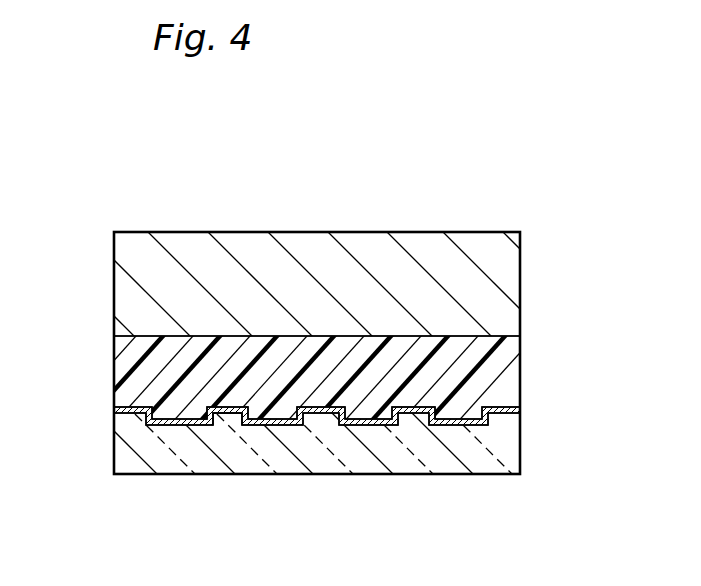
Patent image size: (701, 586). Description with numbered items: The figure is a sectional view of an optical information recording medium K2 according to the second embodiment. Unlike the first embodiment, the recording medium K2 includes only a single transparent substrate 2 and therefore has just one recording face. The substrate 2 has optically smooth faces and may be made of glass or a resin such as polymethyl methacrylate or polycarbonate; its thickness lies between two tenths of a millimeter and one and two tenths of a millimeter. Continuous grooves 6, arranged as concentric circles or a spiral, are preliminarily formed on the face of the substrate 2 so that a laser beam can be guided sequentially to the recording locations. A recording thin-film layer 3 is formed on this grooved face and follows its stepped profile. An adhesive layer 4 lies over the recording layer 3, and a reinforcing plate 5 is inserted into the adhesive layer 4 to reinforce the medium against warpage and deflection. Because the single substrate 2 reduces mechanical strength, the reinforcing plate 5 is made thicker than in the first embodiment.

The optical information recording medium K2 is at (336, 160).
The transparent substrate 2 is at (458, 468).
The recording thin-film layer 3 is at (115, 408).
The adhesive layer 4 is at (500, 382).
The reinforcing plate 5 is at (420, 256).
The continuous groove 6 is at (235, 423).